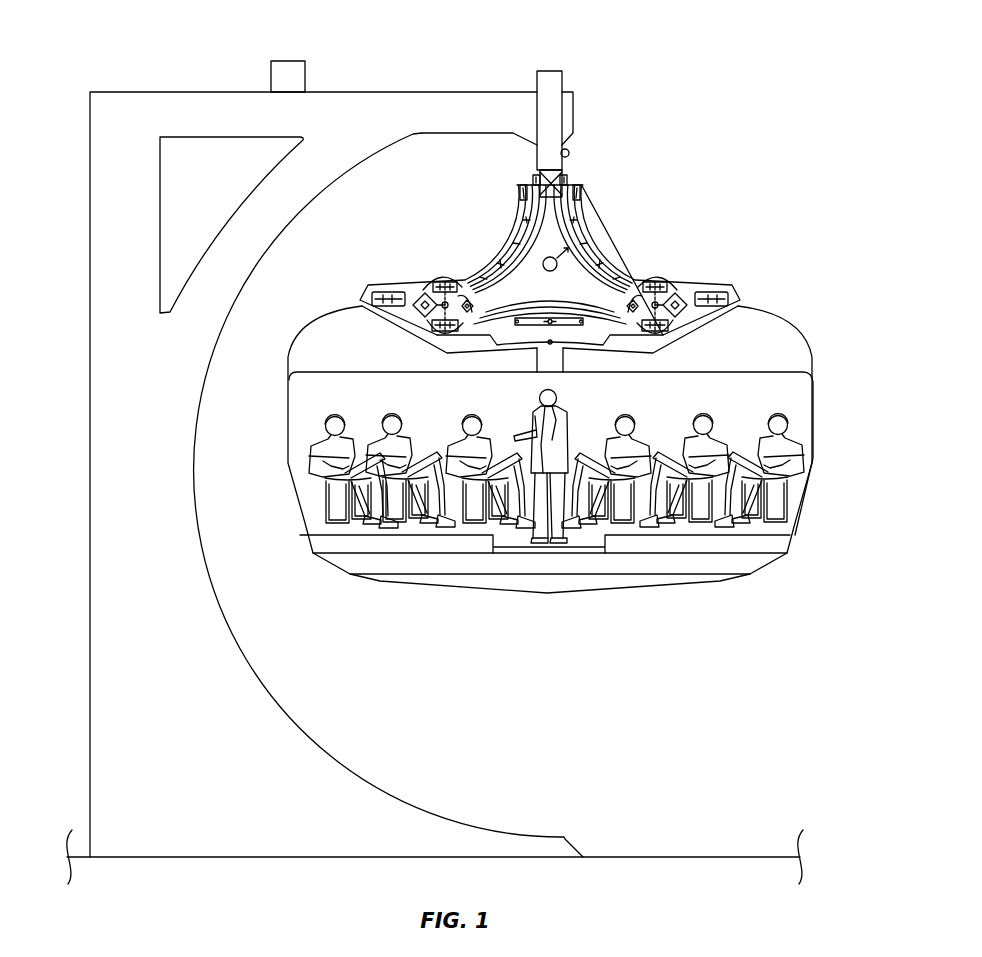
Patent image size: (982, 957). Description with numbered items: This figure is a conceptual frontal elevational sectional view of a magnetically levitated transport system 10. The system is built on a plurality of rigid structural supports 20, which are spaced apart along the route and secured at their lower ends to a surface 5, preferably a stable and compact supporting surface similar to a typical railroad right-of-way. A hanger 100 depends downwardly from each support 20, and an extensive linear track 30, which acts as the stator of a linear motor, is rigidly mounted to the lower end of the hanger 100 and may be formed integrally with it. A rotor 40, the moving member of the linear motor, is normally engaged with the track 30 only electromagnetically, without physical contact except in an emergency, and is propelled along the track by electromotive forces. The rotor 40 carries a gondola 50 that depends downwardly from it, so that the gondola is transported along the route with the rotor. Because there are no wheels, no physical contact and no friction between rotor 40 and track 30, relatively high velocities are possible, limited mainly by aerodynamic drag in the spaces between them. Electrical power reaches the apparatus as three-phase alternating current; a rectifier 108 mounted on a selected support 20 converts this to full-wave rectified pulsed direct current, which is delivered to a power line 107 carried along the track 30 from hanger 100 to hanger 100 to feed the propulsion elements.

The surface 5 is at (660, 857).
The magnetically levitated transport system 10 is at (651, 59).
The rigid structural support 20 is at (384, 100).
The linear track 30 is at (518, 268).
The rotor 40 is at (672, 275).
The gondola 50 is at (793, 527).
The hanger 100 is at (549, 71).
The power line 107 is at (570, 153).
The rectifier 108 is at (290, 61).